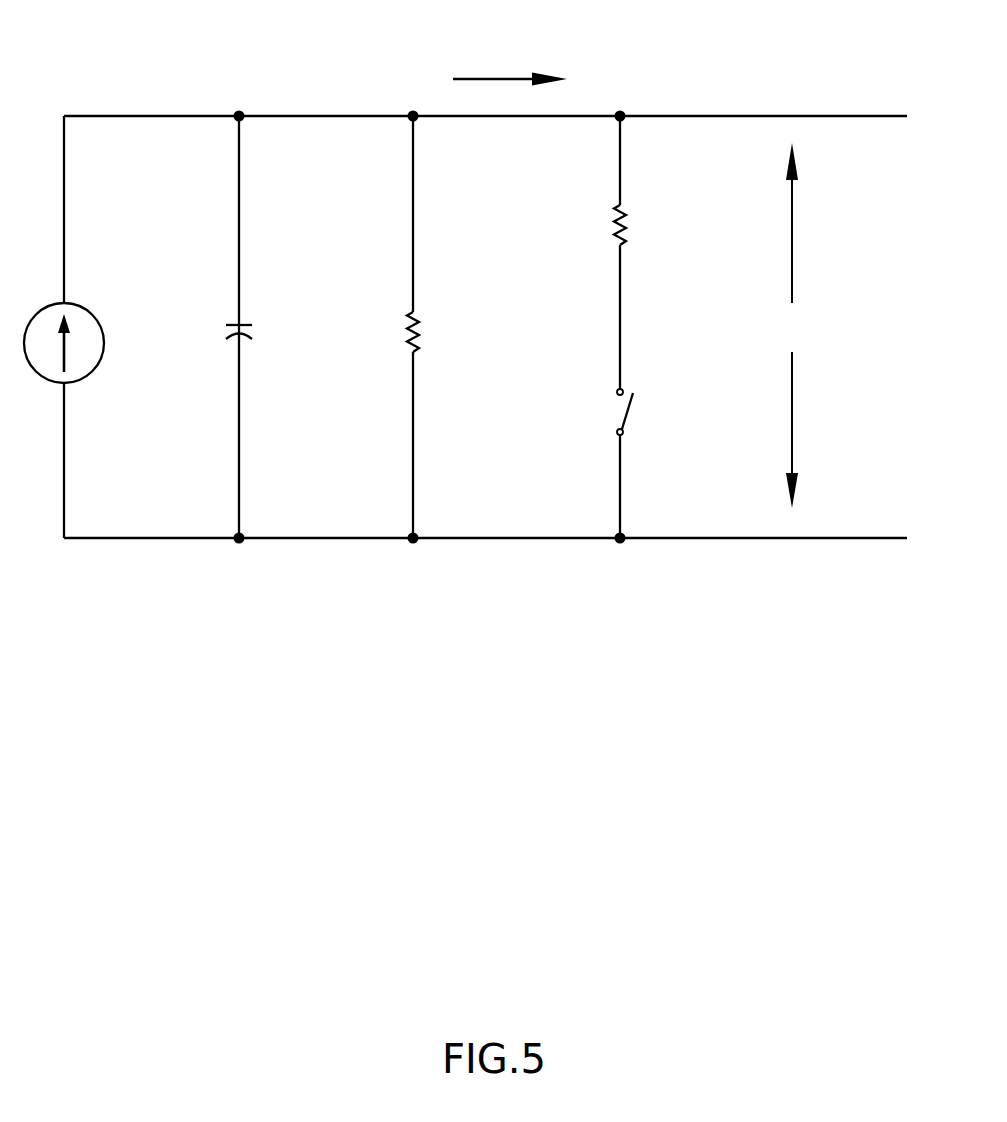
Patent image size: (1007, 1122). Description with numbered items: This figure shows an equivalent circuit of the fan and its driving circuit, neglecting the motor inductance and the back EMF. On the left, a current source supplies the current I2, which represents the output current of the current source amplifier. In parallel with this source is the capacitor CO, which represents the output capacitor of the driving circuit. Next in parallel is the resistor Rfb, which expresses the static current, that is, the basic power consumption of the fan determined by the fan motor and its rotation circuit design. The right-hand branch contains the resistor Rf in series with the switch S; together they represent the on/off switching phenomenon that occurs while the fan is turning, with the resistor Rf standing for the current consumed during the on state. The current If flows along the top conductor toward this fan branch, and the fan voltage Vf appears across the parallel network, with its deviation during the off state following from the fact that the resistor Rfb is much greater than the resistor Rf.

The current I2 is at (84, 343).
The capacitor CO is at (262, 327).
The resistor Rfb is at (437, 327).
The resistor Rf is at (639, 252).
The switch S is at (633, 463).
The fan current If is at (510, 58).
The fan voltage Vf is at (789, 325).